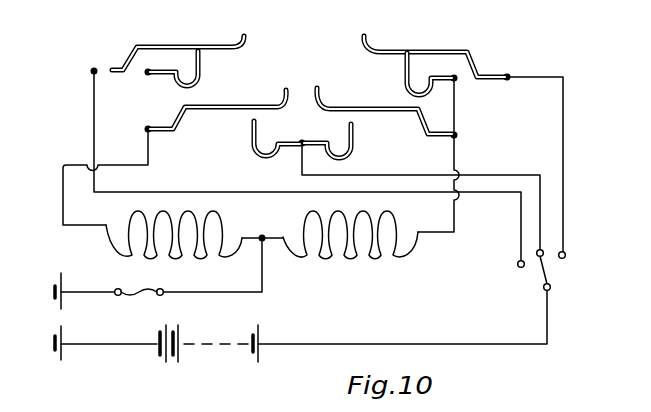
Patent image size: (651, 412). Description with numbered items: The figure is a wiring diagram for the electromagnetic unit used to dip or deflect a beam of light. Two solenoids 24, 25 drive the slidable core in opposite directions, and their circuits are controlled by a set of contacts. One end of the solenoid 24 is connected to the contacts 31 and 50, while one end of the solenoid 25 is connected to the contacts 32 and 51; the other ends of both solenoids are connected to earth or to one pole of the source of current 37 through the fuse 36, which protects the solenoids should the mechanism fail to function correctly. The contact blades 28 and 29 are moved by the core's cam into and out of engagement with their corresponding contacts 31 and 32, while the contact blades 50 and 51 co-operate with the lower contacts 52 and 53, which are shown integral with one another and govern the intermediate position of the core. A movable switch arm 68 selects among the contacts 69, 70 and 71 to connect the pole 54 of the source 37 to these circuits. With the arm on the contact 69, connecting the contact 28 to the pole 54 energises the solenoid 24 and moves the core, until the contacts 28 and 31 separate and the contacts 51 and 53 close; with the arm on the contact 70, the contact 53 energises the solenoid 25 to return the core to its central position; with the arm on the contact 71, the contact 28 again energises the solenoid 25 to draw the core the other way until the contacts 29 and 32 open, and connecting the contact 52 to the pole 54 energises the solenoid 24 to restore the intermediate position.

The solenoid 24 is at (308, 217).
The solenoid 25 is at (228, 210).
The contact blade 28 is at (392, 51).
The contact blade 29 is at (207, 46).
The contact 31 is at (405, 80).
The contact 32 is at (200, 68).
The fuse 36 is at (147, 291).
The source of current 37 is at (224, 345).
The contact blade 50 is at (318, 88).
The contact blade 51 is at (285, 89).
The lower contact 52 is at (353, 135).
The lower contact 53 is at (252, 142).
The pole 54 is at (262, 343).
The movable switch arm 68 is at (551, 288).
The contact 69 is at (566, 255).
The contact 70 is at (543, 251).
The contact 71 is at (517, 264).